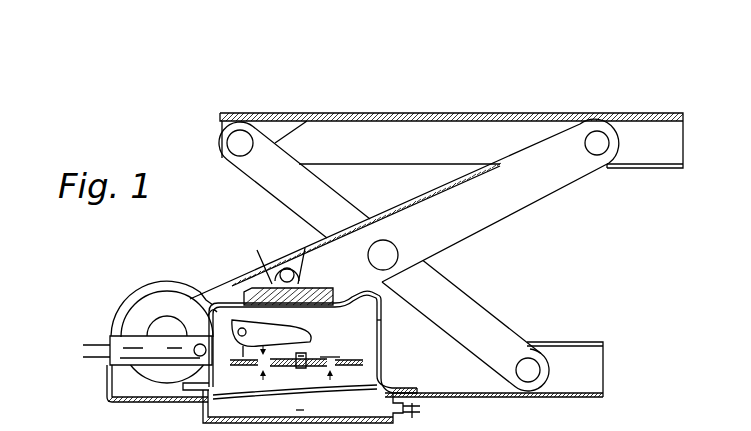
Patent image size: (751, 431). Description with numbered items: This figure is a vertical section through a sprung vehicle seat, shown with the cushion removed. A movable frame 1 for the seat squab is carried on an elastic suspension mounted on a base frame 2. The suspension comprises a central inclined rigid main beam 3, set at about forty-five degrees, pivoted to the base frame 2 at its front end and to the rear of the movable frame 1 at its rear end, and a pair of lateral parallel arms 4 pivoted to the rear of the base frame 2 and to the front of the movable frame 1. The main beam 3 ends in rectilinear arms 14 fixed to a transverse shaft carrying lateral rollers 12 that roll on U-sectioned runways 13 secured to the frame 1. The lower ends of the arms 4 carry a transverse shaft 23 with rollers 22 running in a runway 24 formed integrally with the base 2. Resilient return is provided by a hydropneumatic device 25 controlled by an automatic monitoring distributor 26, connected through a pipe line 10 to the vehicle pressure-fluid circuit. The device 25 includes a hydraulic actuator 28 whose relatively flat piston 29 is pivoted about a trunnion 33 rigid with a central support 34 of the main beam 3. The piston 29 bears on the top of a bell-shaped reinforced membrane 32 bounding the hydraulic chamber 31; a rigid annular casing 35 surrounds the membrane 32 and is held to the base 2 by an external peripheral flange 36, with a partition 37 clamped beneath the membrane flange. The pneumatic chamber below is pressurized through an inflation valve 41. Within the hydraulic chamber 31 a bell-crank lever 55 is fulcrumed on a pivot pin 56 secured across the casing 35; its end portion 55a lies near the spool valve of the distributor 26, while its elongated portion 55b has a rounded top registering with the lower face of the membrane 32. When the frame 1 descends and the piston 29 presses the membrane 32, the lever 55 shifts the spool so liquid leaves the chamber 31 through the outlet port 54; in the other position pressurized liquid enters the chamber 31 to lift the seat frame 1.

The movable frame 1 is at (440, 118).
The base frame 2 is at (486, 397).
The main beam 3 is at (446, 188).
The lateral arms 4 is at (487, 312).
The pipe line 10 is at (90, 345).
The lateral rollers 12 is at (620, 148).
The runways 13 is at (598, 172).
The rectilinear arms 14 is at (548, 183).
The rollers 22 is at (548, 352).
The transverse shaft 23 is at (531, 383).
The runway 24 is at (604, 342).
The hydropneumatic device 25 is at (227, 296).
The automatic monitoring distributor 26 is at (127, 357).
The hydraulic actuator 28 is at (344, 286).
The piston 29 is at (301, 291).
The hydraulic chamber 31 is at (320, 390).
The reinforced membrane 32 is at (388, 302).
The trunnion 33 is at (289, 266).
The central support 34 is at (268, 262).
The rigid annular casing 35 is at (385, 331).
The external peripheral flange 36 is at (411, 389).
The partition 37 is at (352, 388).
The inflation valve 41 is at (414, 416).
The outlet port 54 is at (300, 414).
The bell-crank lever 55 is at (255, 332).
The end portion 55a is at (253, 392).
The elongated portion 55b is at (330, 349).
The pivot pin 56 is at (208, 315).